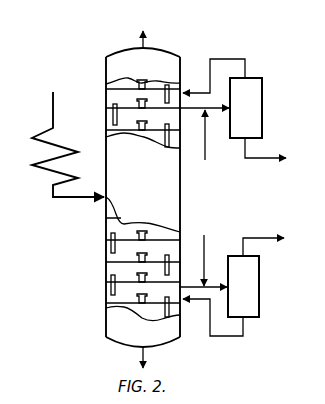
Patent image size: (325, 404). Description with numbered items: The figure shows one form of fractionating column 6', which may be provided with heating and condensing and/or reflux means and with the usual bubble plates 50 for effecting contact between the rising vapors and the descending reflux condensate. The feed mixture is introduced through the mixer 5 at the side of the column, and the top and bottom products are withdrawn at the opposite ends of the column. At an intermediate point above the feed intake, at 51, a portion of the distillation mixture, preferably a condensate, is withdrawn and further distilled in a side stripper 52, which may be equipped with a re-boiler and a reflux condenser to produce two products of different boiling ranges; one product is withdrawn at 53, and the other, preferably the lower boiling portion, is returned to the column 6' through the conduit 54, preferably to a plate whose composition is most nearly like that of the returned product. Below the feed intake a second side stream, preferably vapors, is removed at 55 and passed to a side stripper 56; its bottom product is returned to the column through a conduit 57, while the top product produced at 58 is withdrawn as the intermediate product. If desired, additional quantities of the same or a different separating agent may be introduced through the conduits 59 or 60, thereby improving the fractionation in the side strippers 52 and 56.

The mixer 5 is at (35, 131).
The fractionating column 6' is at (146, 199).
The bubble plates 50 is at (106, 85).
The intermediate withdrawal point 51 is at (184, 109).
The side stripper 52 is at (262, 93).
The product withdrawal 53 is at (251, 158).
The conduit 54 is at (222, 60).
The side stream withdrawal point 55 is at (181, 288).
The side stripper 56 is at (259, 280).
The conduit 57 is at (210, 319).
The top product outlet 58 is at (248, 238).
The conduit 59 is at (205, 148).
The conduit 60 is at (204, 246).